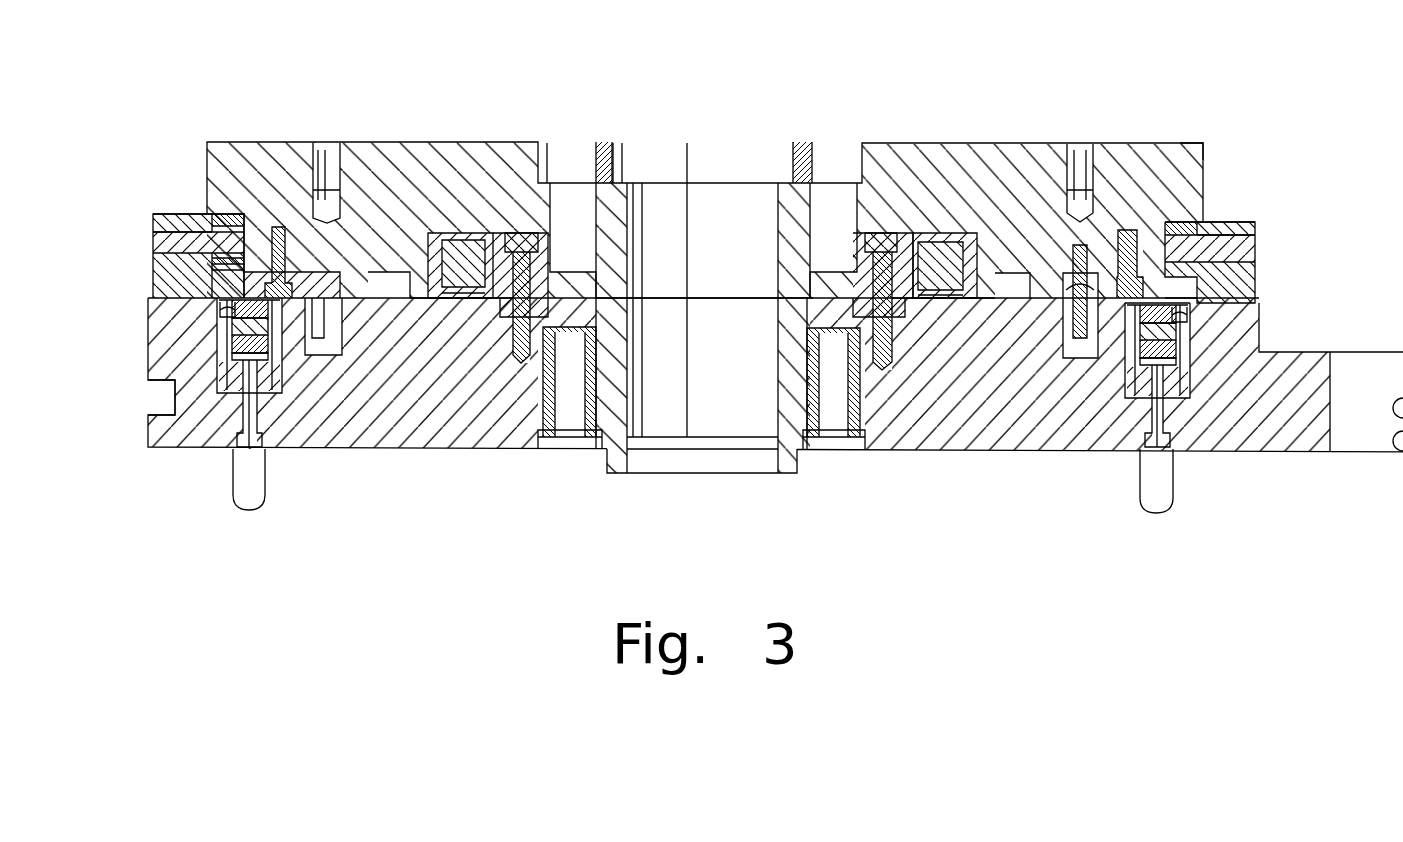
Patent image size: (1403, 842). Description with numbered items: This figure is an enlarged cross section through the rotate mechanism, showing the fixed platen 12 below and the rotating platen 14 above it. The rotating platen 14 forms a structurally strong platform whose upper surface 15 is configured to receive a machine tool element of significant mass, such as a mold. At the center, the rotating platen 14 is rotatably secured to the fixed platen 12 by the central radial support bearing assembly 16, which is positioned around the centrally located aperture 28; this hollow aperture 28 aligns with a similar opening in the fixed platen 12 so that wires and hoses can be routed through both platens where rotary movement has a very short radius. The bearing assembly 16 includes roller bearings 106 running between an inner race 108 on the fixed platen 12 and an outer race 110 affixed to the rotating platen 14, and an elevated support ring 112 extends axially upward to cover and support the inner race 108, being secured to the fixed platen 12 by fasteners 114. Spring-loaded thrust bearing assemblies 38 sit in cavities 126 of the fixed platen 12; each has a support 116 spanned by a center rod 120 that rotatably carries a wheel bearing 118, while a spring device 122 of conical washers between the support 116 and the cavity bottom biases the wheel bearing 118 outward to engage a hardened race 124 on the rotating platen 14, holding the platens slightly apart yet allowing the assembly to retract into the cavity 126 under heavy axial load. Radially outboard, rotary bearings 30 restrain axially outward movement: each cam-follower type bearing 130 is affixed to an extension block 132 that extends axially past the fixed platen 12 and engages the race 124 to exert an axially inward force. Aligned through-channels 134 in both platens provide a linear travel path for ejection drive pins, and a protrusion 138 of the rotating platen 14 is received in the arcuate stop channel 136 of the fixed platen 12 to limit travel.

The fixed platen 12 is at (882, 450).
The rotating platen 14 is at (942, 152).
The surface 15 is at (1195, 152).
The central radial support bearing assembly 16 is at (455, 314).
The centrally located aperture 28 is at (768, 195).
The rotary bearings 30 is at (170, 212).
The thrust bearing assemblies 38 is at (283, 387).
The roller bearings 106 is at (475, 262).
The inner race 108 is at (510, 240).
The outer race 110 is at (440, 250).
The elevated support ring 112 is at (540, 300).
The fasteners 114 is at (540, 238).
The support 116 is at (228, 383).
The wheel bearing 118 is at (175, 398).
The center rod 120 is at (215, 332).
The spring device 122 is at (250, 385).
The race 124 is at (280, 235).
The cavity 126 is at (225, 305).
The cam-follower type bearing 130 is at (213, 222).
The extension block 132 is at (160, 265).
The through-channels 134 is at (578, 425).
The stop channel 136 is at (325, 350).
The protrusion 138 is at (1088, 345).